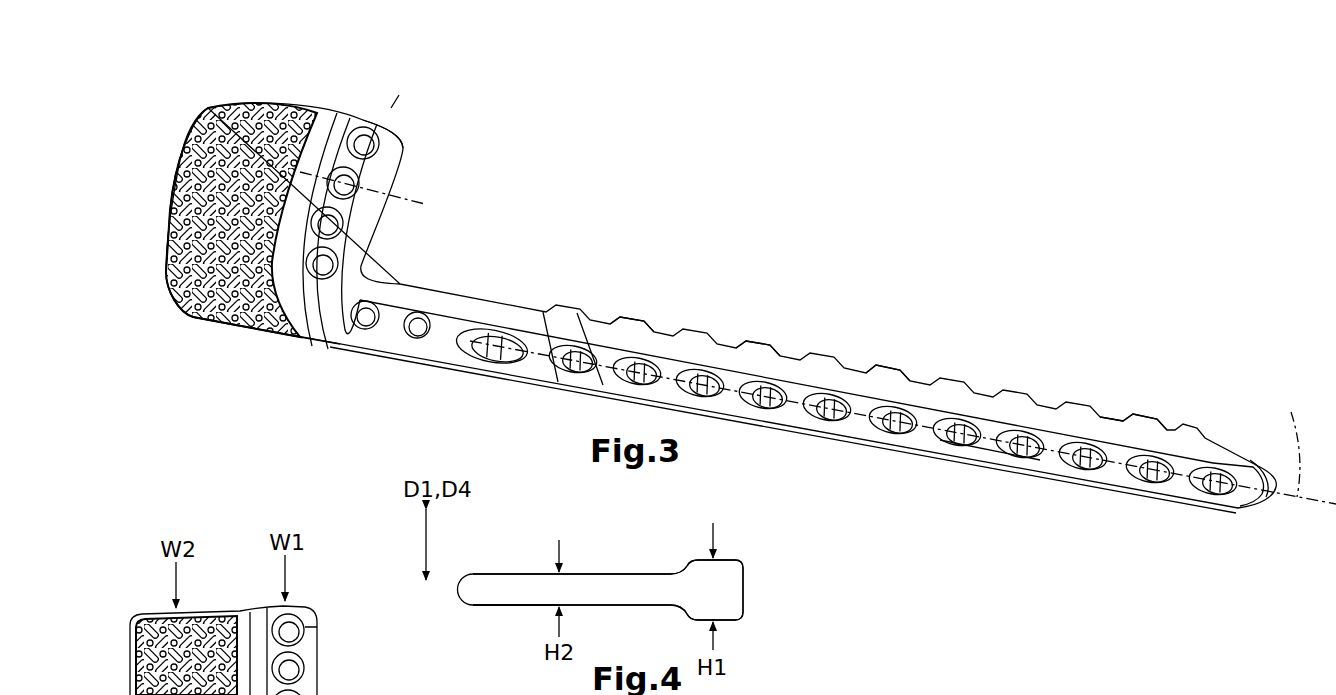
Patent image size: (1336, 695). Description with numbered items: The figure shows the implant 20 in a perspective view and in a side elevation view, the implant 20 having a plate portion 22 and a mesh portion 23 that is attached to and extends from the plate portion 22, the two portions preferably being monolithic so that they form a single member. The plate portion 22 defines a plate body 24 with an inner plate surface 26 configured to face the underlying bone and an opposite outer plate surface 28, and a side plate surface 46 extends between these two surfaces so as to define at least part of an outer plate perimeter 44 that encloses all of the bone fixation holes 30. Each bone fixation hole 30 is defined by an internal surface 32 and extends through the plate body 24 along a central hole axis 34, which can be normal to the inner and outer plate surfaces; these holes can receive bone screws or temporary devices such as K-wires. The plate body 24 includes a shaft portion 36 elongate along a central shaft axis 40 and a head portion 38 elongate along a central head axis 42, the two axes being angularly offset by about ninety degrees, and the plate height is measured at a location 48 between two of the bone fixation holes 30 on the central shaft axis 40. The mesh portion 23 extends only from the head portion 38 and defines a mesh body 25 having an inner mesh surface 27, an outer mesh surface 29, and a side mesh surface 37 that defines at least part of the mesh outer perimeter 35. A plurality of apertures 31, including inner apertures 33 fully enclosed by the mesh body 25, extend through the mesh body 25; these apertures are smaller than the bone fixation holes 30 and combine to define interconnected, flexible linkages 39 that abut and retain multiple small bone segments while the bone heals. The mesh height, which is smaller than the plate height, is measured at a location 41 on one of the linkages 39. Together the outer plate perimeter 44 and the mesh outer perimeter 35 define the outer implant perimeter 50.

In FIG. 3, the implant 20 is at (880, 256).
In FIG. 4, the implant 20 is at (441, 601).
In FIG. 3, the plate portion 22 is at (1011, 412).
In FIG. 4, the plate portion 22 is at (738, 610).
In FIG. 3, the mesh portion 23 is at (240, 104).
In FIG. 4, the mesh portion 23 is at (492, 590).
In FIG. 3, the plate body 24 is at (878, 390).
In FIG. 3, the mesh body 25 is at (203, 320).
In FIG. 3, the inner plate surface 26 is at (1091, 408).
In FIG. 4, the inner plate surface 26 is at (693, 623).
In FIG. 4, the inner mesh surface 27 is at (603, 605).
In FIG. 3, the outer plate surface 28 is at (994, 448).
In FIG. 4, the outer plate surface 28 is at (695, 560).
In FIG. 3, the outer mesh surface 29 is at (176, 238).
In FIG. 4, the outer mesh surface 29 is at (634, 574).
In FIG. 3, the bone fixation holes 30 is at (362, 128).
In FIG. 3, the apertures 31 is at (265, 102).
In FIG. 3, the internal surfaces 32 is at (882, 418).
In FIG. 3, the inner apertures 33 is at (193, 148).
In FIG. 3, the central hole axis 34 is at (407, 192).
In FIG. 3, the mesh outer perimeter 35 is at (297, 112).
In FIG. 3, the shaft portion 36 is at (762, 362).
In FIG. 4, the side mesh surface 37 is at (530, 592).
In FIG. 3, the head portion 38 is at (348, 205).
In FIG. 3, the linkages 39 is at (231, 322).
In FIG. 3, the central shaft axis 40 is at (903, 422).
In FIG. 3, the location 41 is at (320, 117).
In FIG. 4, the location 41 is at (575, 574).
In FIG. 3, the central head axis 42 is at (402, 112).
In FIG. 3, the outer plate perimeter 44 is at (640, 322).
In FIG. 3, the side plate surface 46 is at (948, 402).
In FIG. 4, the side plate surface 46 is at (728, 580).
In FIG. 3, the location 48 is at (362, 167).
In FIG. 4, the location 48 is at (730, 565).
In FIG. 3, the outer implant perimeter 50 is at (293, 345).